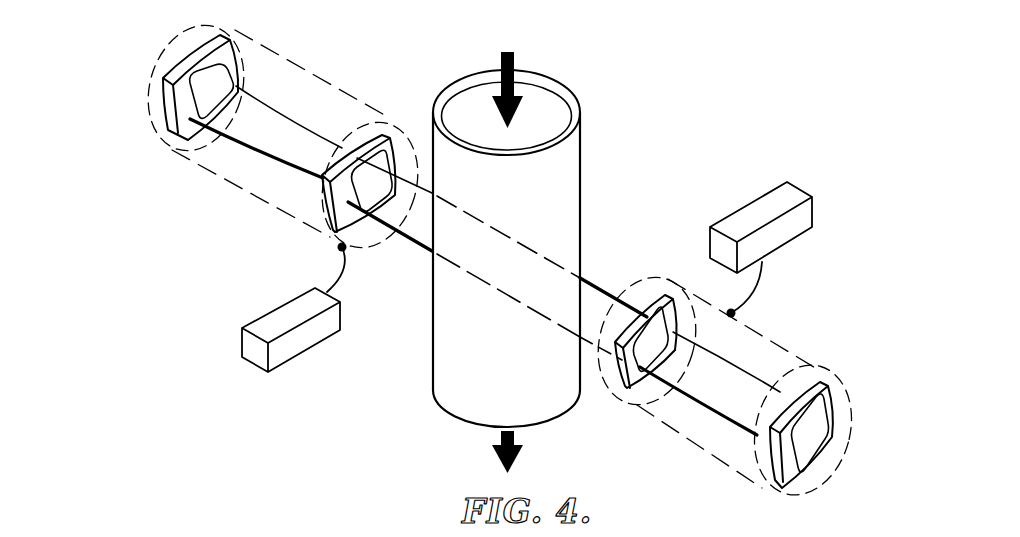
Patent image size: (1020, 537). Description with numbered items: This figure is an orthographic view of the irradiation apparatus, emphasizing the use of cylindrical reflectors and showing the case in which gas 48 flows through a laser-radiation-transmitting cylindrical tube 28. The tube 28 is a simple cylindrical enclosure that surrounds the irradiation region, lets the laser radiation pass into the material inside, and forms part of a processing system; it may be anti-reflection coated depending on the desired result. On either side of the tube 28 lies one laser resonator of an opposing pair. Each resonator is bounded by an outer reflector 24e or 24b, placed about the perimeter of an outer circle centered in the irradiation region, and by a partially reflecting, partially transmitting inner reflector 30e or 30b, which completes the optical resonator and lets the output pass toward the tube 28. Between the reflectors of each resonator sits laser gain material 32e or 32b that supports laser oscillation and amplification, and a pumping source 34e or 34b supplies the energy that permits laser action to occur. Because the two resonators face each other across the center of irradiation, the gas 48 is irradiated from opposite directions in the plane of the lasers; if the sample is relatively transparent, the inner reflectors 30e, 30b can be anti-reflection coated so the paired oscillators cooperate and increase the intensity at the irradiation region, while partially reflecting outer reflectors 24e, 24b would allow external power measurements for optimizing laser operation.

The cylindrical tube 28 is at (585, 186).
The gas 48 is at (507, 248).
The cylindrical outer reflector 24e is at (170, 137).
The cylindrical outer reflector 24b is at (767, 488).
The cylindrical inner reflector 30e is at (370, 131).
The cylindrical inner reflector 30b is at (657, 297).
The laser gain material 32e is at (258, 179).
The laser gain material 32b is at (797, 361).
The pumping source 34e is at (308, 343).
The pumping source 34b is at (777, 243).